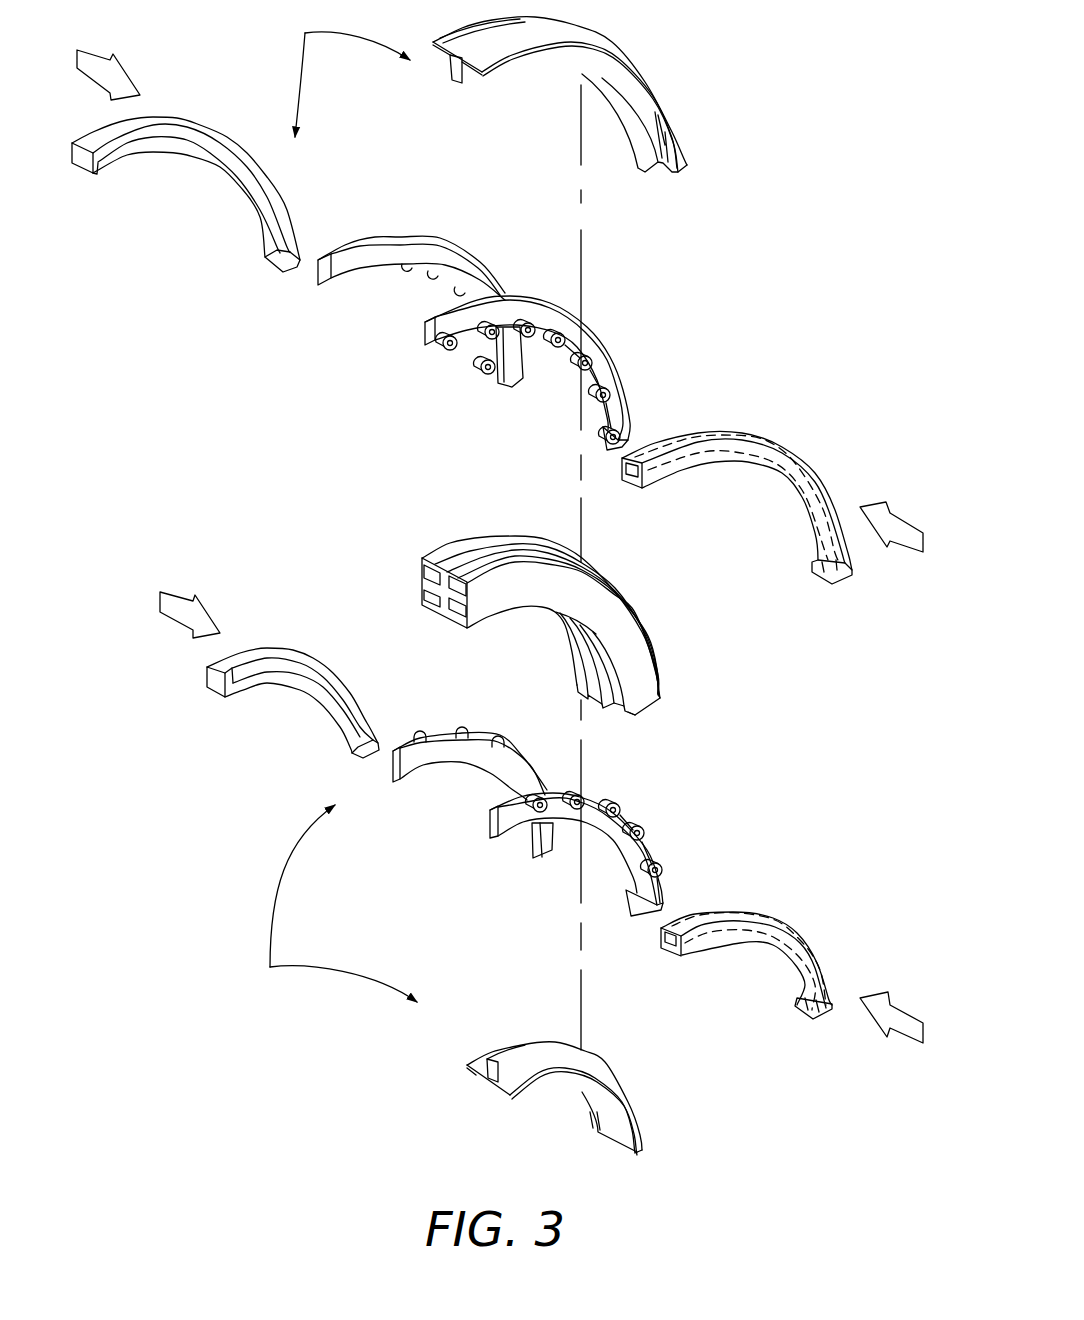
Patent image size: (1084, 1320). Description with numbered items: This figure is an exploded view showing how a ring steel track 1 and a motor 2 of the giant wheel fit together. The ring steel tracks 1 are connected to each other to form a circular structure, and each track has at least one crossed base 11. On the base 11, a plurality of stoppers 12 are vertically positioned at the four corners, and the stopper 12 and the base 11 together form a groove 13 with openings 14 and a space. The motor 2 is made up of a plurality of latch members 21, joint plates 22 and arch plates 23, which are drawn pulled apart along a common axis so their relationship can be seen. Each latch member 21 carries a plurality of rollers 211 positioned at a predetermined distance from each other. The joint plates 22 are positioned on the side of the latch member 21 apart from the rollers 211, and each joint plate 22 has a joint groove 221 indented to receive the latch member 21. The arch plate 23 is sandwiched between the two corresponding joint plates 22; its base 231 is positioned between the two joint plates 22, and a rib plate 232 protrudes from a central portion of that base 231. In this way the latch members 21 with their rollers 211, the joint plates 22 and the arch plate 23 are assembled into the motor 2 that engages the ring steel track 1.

The ring steel track 1 is at (475, 533).
The motor 2 is at (328, 507).
The base 11 is at (448, 595).
The stopper 12 is at (505, 542).
The groove 13 is at (425, 580).
The opening 14 is at (447, 570).
The latch member 21 is at (405, 245).
The joint plate 22 is at (175, 123).
The arch plate 23 is at (572, 32).
The roller 211 is at (423, 732).
The joint groove 221 is at (282, 668).
The base 231 is at (497, 1088).
The rib plate 232 is at (527, 1050).